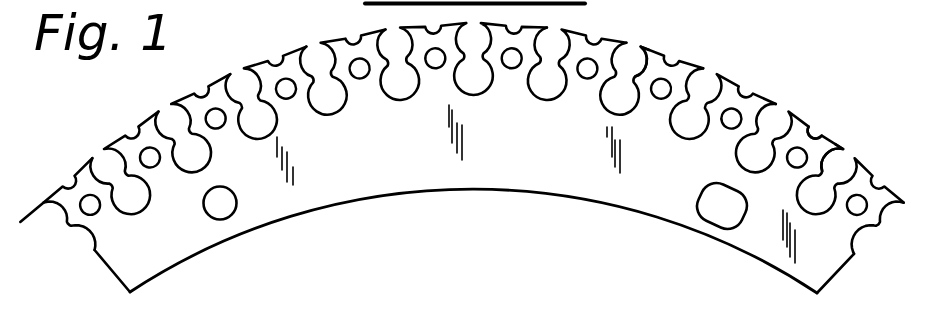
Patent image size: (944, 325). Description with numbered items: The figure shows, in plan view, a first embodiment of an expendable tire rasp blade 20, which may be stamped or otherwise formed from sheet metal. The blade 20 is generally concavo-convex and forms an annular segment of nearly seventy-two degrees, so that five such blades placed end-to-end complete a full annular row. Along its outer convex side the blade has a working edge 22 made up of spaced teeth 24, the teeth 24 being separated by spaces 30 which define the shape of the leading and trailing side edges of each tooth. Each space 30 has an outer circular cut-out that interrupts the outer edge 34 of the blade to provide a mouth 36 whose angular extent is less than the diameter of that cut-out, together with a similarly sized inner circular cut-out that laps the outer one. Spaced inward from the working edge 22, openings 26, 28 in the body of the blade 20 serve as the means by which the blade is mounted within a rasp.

The tire rasp blade 20 is at (843, 264).
The working edge 22 is at (692, 60).
The tooth 24 is at (906, 251).
The opening 26 is at (234, 200).
The opening 28 is at (720, 204).
The space 30 is at (633, 46).
The outer edge 34 is at (45, 207).
The mouth 36 is at (834, 99).